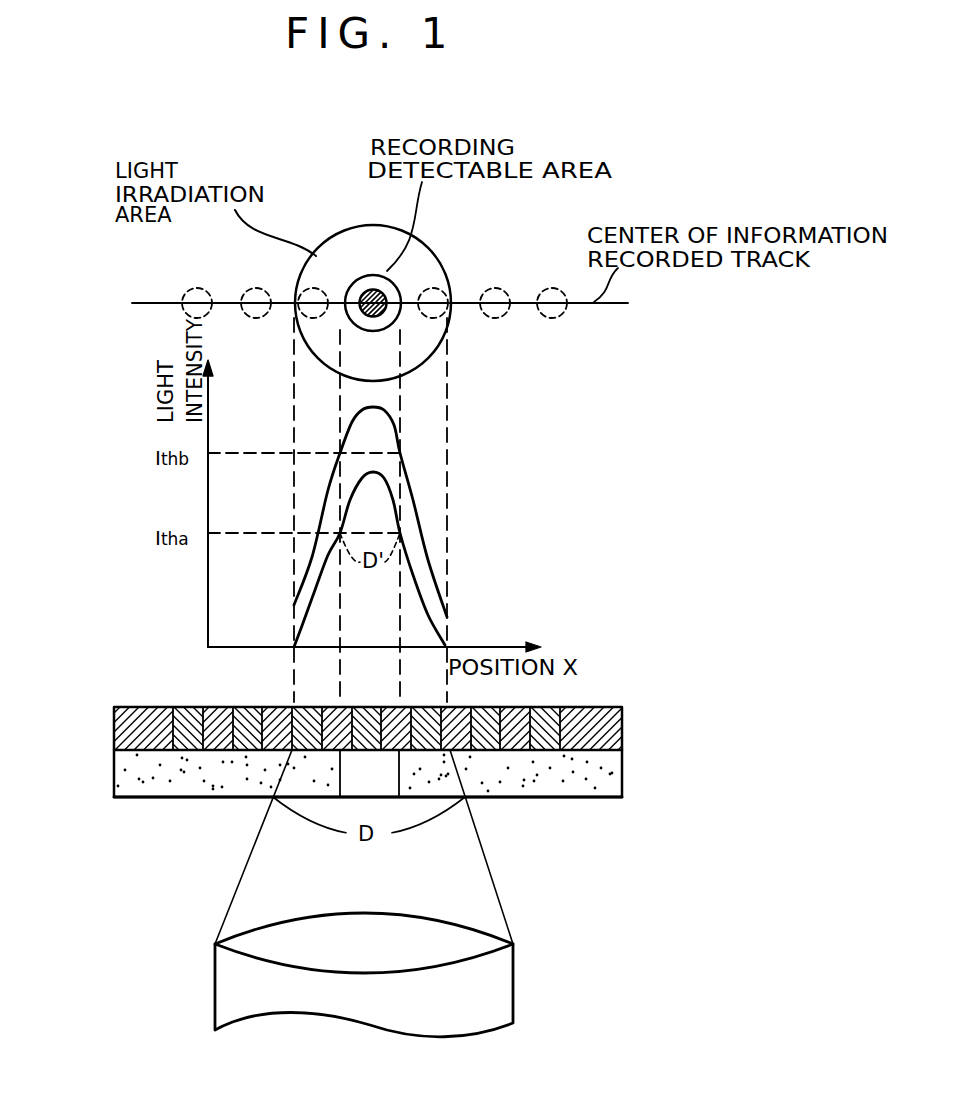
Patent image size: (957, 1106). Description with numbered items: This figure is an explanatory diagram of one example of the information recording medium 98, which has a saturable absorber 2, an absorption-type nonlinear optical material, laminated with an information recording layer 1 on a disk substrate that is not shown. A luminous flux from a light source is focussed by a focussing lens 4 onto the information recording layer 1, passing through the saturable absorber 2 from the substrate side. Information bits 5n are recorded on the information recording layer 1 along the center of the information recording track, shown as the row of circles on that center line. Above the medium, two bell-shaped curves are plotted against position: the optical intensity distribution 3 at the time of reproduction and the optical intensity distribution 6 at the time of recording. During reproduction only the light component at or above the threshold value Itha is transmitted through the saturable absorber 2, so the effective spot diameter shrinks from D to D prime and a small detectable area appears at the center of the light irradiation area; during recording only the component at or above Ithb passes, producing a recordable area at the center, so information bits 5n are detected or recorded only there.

The information recording medium 98 is at (376, 716).
The information recording layer 1 is at (624, 728).
The saturable absorber 2 is at (624, 775).
The optical intensity distribution at the time of reproduction 3 is at (437, 637).
The focussing lens 4 is at (515, 944).
The information bits 5n is at (383, 314).
The optical intensity distribution at the time of recording 6 is at (403, 490).